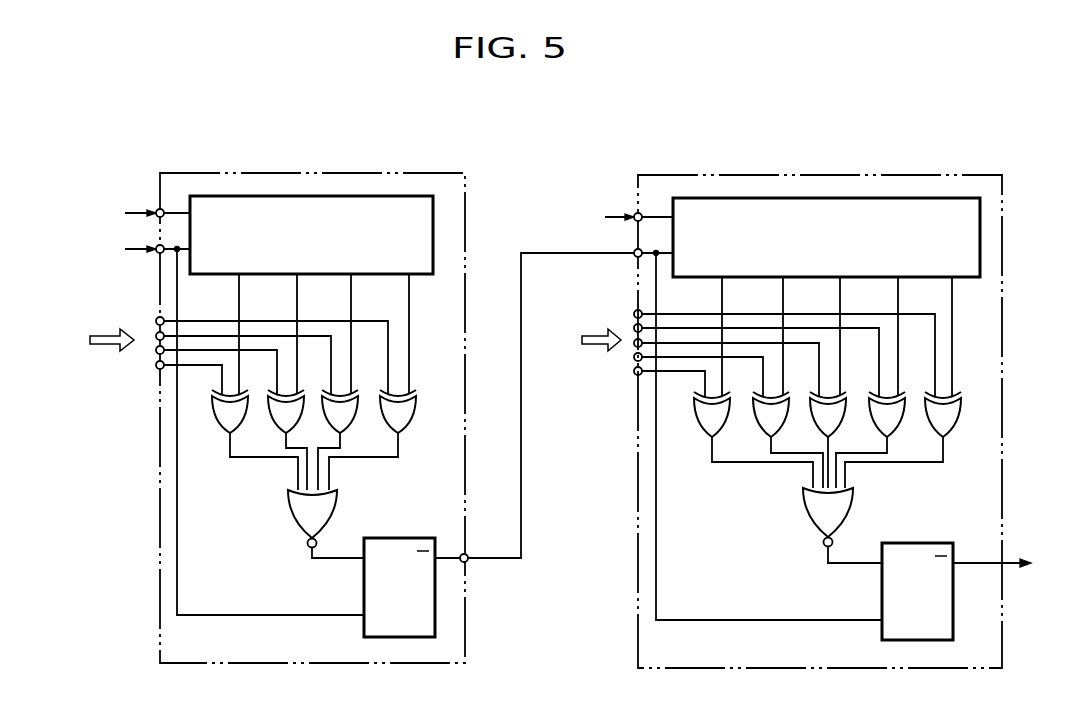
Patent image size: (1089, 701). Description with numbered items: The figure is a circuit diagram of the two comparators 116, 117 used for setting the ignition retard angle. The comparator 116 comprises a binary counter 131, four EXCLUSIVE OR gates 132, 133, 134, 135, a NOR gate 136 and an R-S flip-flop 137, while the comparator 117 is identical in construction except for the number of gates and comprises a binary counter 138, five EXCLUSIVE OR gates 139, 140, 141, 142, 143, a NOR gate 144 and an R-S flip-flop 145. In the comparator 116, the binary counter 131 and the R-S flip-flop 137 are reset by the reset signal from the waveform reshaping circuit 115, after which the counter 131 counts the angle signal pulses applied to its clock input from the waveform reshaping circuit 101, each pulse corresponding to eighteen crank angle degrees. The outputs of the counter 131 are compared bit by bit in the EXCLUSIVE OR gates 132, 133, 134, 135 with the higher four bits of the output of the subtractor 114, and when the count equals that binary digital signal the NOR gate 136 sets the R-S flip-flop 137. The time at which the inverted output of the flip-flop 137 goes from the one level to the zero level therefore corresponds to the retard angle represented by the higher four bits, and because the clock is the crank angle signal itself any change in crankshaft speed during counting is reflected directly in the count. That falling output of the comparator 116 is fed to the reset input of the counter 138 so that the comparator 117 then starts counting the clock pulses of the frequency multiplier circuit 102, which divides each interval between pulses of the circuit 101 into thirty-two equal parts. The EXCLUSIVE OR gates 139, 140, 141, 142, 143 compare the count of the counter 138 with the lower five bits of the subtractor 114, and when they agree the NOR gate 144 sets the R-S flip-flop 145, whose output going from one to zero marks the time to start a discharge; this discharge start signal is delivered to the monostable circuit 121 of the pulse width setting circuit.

The waveform reshaping circuit 101 is at (139, 214).
The frequency multiplier circuit 102 is at (621, 217).
The subtractor 114 is at (490, 353).
The waveform reshaping circuit 115 is at (226, 426).
The comparator 116 is at (371, 173).
The comparator 117 is at (885, 175).
The monostable circuit 121 is at (1008, 564).
The binary counter 131 is at (282, 196).
The EXCLUSIVE OR gate 132 is at (217, 412).
The EXCLUSIVE OR gate 133 is at (280, 421).
The EXCLUSIVE OR gate 134 is at (350, 420).
The EXCLUSIVE OR gate 135 is at (409, 412).
The NOR gate 136 is at (329, 504).
The R-S flip-flop 137 is at (401, 538).
The binary counter 138 is at (785, 198).
The EXCLUSIVE OR gate 139 is at (700, 423).
The EXCLUSIVE OR gate 140 is at (762, 420).
The EXCLUSIVE OR gate 141 is at (826, 426).
The EXCLUSIVE OR gate 142 is at (884, 420).
The EXCLUSIVE OR gate 143 is at (946, 424).
The NOR gate 144 is at (846, 503).
The R-S flip-flop 145 is at (924, 543).